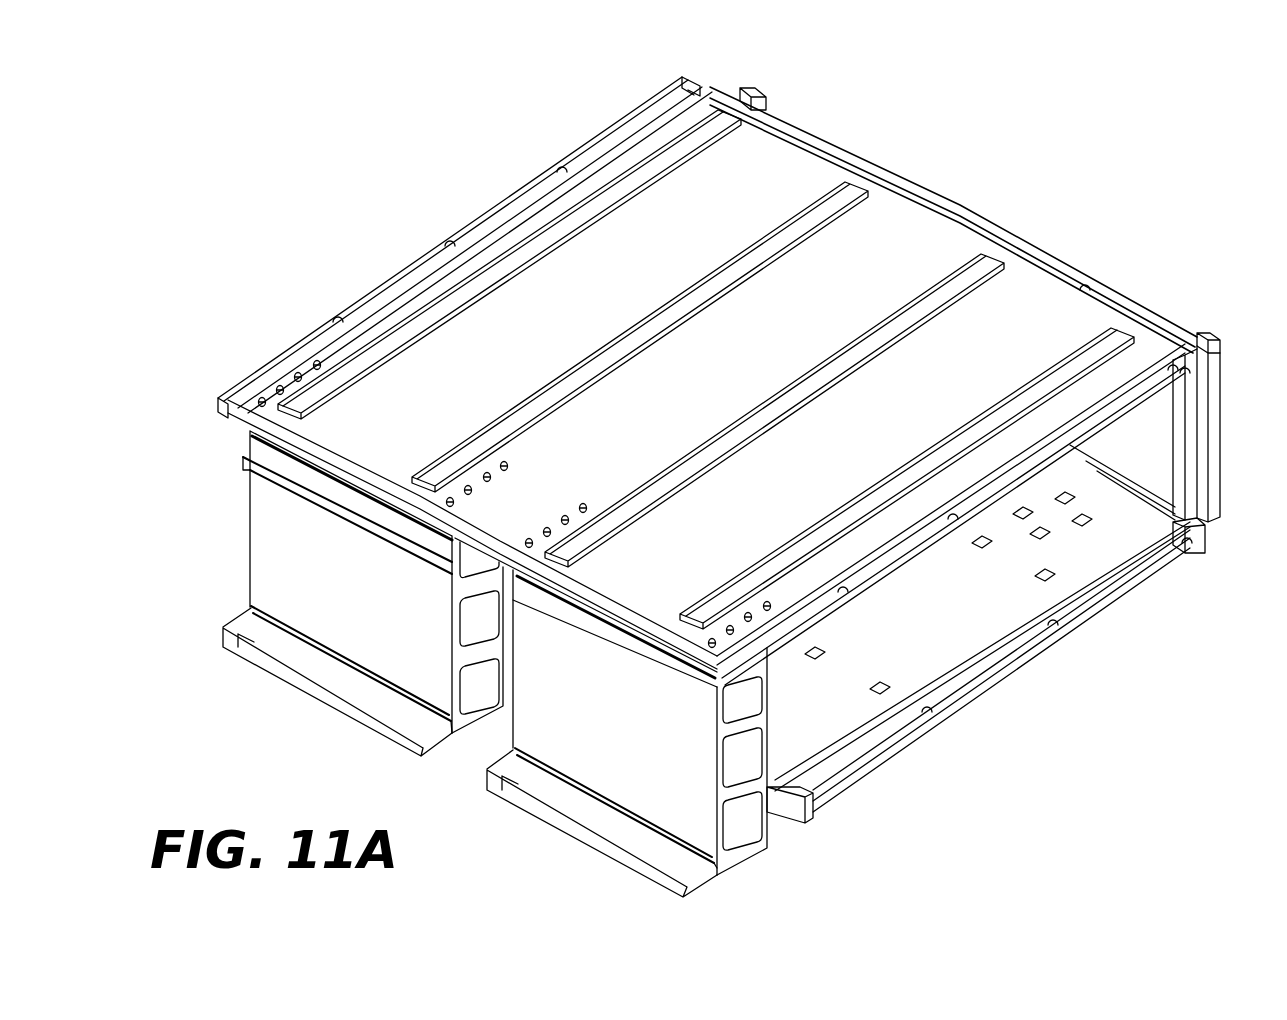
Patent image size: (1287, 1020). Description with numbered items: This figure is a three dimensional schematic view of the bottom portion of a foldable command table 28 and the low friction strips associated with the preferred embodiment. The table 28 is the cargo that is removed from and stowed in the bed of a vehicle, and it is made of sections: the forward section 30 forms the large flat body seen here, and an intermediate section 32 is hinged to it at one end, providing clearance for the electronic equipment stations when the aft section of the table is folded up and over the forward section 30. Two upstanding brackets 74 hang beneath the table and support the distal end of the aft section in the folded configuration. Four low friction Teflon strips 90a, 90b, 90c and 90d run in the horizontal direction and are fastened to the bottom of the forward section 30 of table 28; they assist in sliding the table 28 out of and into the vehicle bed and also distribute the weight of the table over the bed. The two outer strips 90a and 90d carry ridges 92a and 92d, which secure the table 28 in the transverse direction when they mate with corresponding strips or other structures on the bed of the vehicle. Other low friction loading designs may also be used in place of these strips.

The foldable command table 28 is at (370, 257).
The forward section 30 is at (250, 418).
The intermediate section 32 is at (1220, 447).
The upstanding brackets 74 is at (283, 570).
The low friction strip 90a is at (509, 252).
The low friction strip 90b is at (822, 205).
The low friction strip 90c is at (970, 275).
The low friction strip 90d is at (938, 445).
The ridge 92a is at (560, 230).
The ridge 92d is at (817, 538).